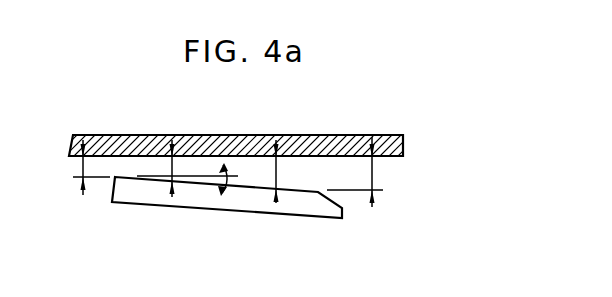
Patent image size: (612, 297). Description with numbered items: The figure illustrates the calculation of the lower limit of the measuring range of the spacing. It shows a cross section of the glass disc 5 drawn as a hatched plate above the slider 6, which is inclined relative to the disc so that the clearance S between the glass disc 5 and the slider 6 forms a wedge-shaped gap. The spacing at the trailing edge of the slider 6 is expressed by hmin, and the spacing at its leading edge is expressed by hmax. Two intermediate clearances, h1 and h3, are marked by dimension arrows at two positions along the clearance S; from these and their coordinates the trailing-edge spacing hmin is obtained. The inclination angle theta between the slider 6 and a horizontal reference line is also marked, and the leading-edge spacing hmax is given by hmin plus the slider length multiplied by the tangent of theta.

The glass disc 5 is at (394, 135).
The slider 6 is at (317, 218).
The clearance S is at (293, 173).
The spacing at trailing edge hmin is at (90, 186).
The clearance h1 is at (175, 150).
The clearance h3 is at (279, 153).
The spacing at leading edge hmax is at (378, 172).
The inclination angle theta is at (194, 179).